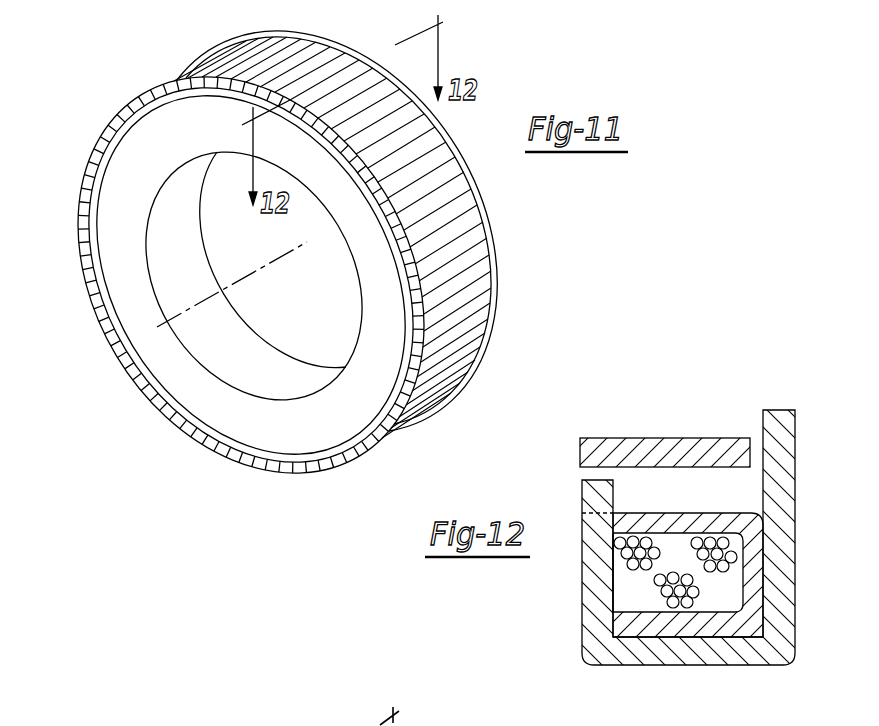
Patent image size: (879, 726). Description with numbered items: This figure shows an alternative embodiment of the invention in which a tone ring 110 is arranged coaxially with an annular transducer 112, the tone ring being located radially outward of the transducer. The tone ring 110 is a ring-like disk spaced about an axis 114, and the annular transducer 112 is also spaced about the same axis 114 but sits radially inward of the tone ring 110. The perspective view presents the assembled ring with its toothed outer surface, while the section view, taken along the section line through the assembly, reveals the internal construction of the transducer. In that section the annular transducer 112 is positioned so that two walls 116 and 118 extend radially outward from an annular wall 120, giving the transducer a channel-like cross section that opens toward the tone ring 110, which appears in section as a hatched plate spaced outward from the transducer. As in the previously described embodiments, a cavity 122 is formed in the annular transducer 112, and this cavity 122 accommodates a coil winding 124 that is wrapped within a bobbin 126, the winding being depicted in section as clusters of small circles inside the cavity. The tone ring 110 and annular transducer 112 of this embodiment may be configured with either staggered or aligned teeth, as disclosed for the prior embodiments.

In FIG. 11, the tone ring 110 is at (457, 250).
In FIG. 12, the tone ring 110 is at (641, 448).
In FIG. 11, the annular transducer 112 is at (150, 163).
In FIG. 11, the axis 114 is at (197, 312).
In FIG. 11, the wall 116 is at (190, 397).
In FIG. 12, the wall 116 is at (597, 547).
In FIG. 12, the wall 118 is at (776, 545).
In FIG. 11, the annular wall 120 is at (164, 234).
In FIG. 12, the annular wall 120 is at (663, 650).
In FIG. 12, the cavity 122 is at (723, 585).
In FIG. 12, the coil winding 124 is at (613, 580).
In FIG. 12, the bobbin 126 is at (720, 625).